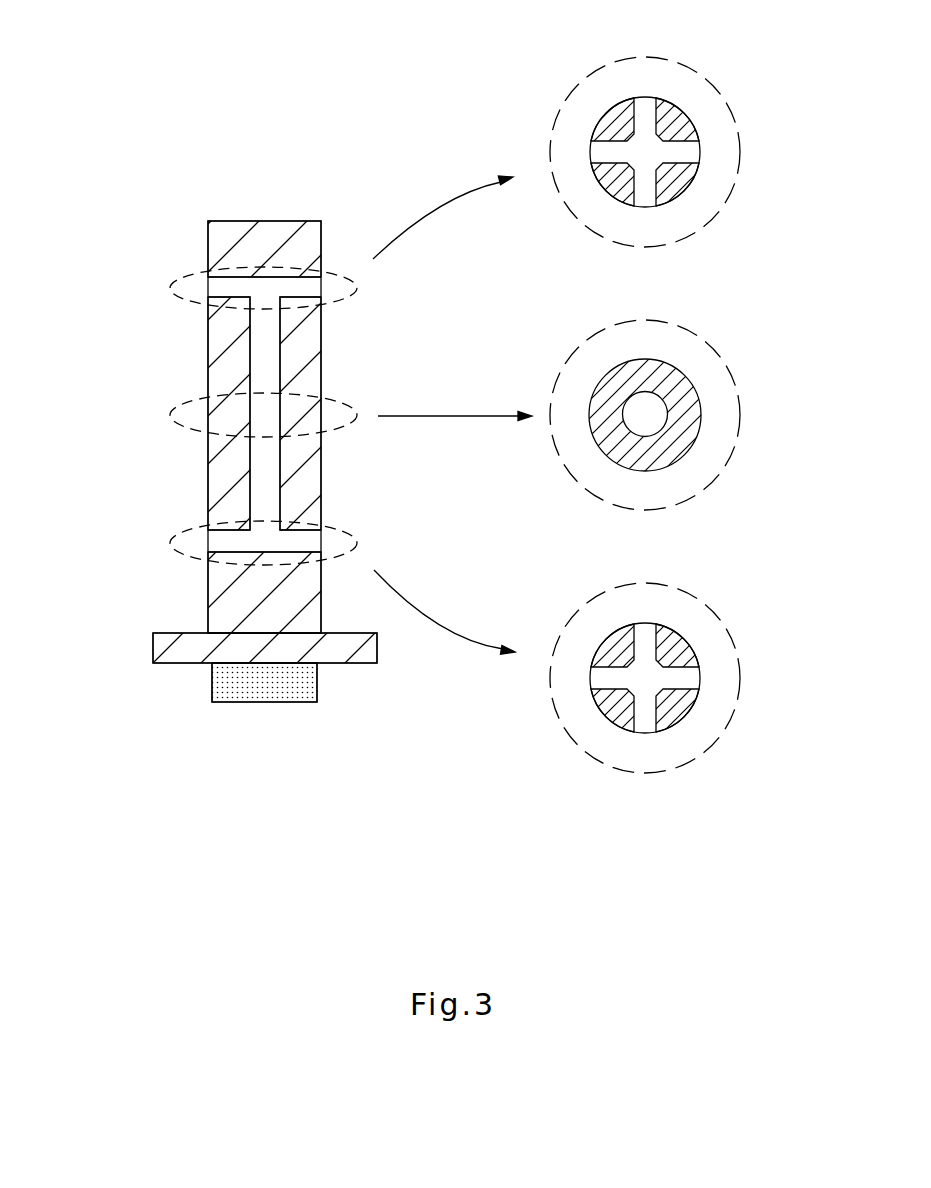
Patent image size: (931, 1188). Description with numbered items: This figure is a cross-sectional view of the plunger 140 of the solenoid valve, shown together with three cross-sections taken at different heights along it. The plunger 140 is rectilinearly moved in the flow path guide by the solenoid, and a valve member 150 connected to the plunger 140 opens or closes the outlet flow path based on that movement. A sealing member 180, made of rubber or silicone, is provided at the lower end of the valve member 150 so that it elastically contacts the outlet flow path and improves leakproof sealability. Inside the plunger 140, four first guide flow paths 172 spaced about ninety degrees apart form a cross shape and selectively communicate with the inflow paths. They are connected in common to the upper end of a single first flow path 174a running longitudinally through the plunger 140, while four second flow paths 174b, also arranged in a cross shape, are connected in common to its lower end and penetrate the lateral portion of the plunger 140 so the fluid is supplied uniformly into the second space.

The plunger 140 is at (222, 236).
The valve member 150 is at (165, 647).
The sealing member 180 is at (220, 683).
The first guide flow path 172 is at (682, 155).
The first flow path 174a is at (662, 398).
The second flow path 174b is at (682, 681).